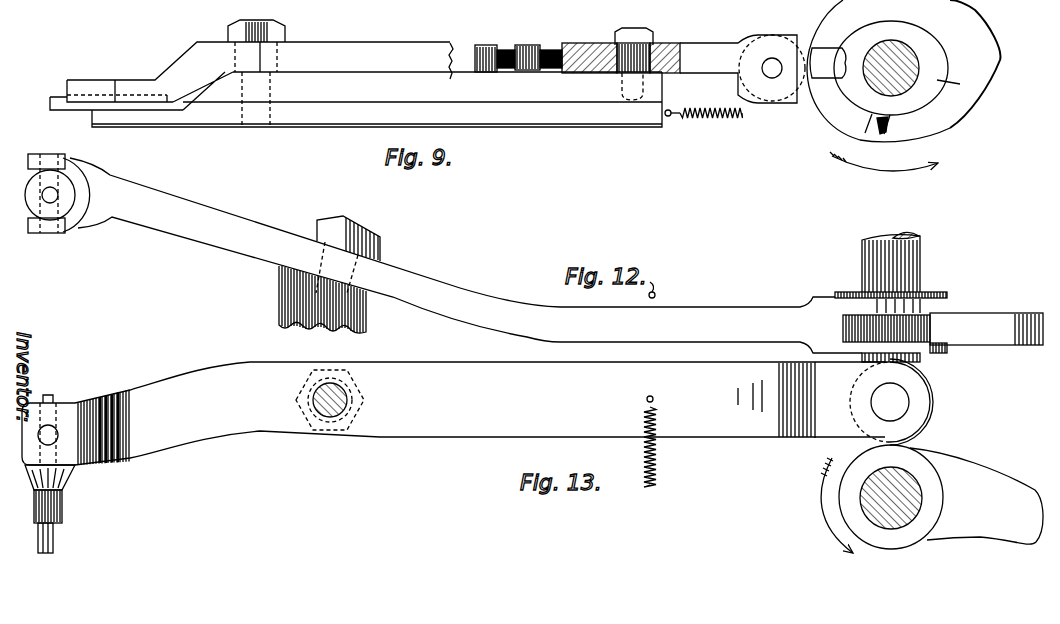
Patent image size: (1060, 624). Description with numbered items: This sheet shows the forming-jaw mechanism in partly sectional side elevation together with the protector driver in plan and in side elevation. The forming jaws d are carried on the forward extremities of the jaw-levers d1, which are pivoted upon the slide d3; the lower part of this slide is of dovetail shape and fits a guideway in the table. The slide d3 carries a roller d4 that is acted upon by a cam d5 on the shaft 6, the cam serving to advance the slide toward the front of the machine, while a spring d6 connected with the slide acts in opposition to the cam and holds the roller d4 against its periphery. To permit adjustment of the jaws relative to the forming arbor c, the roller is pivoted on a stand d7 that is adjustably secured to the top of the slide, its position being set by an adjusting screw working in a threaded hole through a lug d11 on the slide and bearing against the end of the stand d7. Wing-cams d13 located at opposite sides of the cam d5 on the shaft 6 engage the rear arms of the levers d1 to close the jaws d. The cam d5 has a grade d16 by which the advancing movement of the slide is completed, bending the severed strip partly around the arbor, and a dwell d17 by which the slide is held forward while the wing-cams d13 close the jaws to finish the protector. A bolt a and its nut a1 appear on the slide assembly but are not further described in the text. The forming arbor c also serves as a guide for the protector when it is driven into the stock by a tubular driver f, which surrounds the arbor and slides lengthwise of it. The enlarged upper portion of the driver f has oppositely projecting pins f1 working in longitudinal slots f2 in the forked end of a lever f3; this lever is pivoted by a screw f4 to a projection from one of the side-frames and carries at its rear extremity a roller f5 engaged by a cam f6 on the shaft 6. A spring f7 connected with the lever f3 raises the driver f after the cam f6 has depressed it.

In FIG. 9, the forming jaws d is at (54, 90).
In FIG. 9, the jaw-levers d1 is at (360, 41).
In FIG. 9, the slide d3 is at (224, 127).
In FIG. 9, the roller d4 is at (810, 4).
In FIG. 9, the cam d5 is at (940, 142).
In FIG. 9, the spring d6 is at (712, 120).
In FIG. 9, the stand d7 is at (698, 46).
In FIG. 9, the lug d11 is at (486, 44).
In FIG. 9, the wing-cams d13 is at (936, 108).
In FIG. 9, the grade d16 is at (978, 12).
In FIG. 9, the dwell d17 is at (1002, 54).
In FIG. 9, the bolt nut a is at (270, 20).
In FIG. 9, the bolt a1 is at (662, 42).
In FIG. 9, the shaft 6 is at (868, 88).
In FIG. 12, the shaft 6 is at (860, 262).
In FIG. 13, the shaft 6 is at (862, 492).
In FIG. 12, the forming arbor c is at (58, 194).
In FIG. 13, the forming arbor c is at (56, 540).
In FIG. 12, the tubular driver f is at (28, 186).
In FIG. 13, the tubular driver f is at (30, 400).
In FIG. 12, the pins f1 is at (73, 132).
In FIG. 13, the pins f1 is at (52, 428).
In FIG. 13, the longitudinal slots f2 is at (62, 490).
In FIG. 12, the lever f3 is at (460, 290).
In FIG. 13, the lever f3 is at (420, 361).
In FIG. 12, the screw f4 is at (355, 232).
In FIG. 13, the screw f4 is at (312, 400).
In FIG. 12, the roller f5 is at (936, 322).
In FIG. 13, the roller f5 is at (936, 393).
In FIG. 12, the cam f6 is at (978, 348).
In FIG. 13, the cam f6 is at (980, 463).
In FIG. 12, the spring f7 is at (656, 294).
In FIG. 13, the spring f7 is at (642, 482).